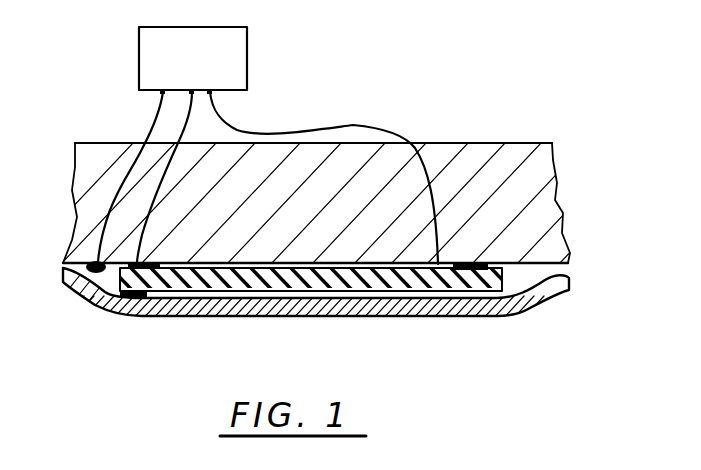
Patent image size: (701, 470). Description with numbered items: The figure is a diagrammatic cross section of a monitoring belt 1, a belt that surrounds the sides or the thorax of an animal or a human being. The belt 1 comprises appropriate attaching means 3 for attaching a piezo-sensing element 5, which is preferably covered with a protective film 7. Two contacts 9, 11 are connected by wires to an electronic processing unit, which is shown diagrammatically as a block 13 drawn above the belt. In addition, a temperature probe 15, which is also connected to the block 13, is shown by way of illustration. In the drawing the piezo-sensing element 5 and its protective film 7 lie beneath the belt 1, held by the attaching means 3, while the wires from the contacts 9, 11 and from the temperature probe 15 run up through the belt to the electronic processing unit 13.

The monitoring belt 1 is at (518, 142).
The attaching means 3 is at (155, 263).
The piezo-sensing element 5 is at (290, 299).
The protective film 7 is at (463, 317).
The contact 9 is at (148, 306).
The contact 11 is at (433, 265).
The electronic processing unit 13 is at (204, 71).
The temperature probe 15 is at (81, 262).